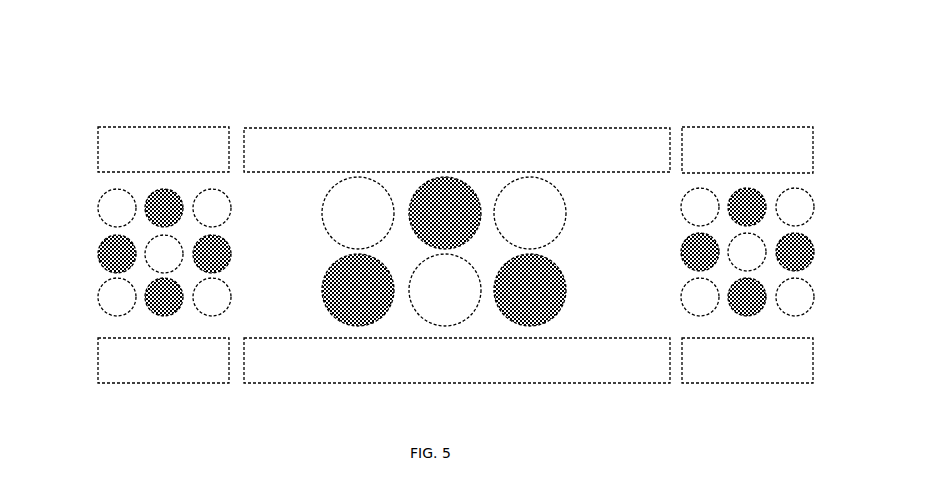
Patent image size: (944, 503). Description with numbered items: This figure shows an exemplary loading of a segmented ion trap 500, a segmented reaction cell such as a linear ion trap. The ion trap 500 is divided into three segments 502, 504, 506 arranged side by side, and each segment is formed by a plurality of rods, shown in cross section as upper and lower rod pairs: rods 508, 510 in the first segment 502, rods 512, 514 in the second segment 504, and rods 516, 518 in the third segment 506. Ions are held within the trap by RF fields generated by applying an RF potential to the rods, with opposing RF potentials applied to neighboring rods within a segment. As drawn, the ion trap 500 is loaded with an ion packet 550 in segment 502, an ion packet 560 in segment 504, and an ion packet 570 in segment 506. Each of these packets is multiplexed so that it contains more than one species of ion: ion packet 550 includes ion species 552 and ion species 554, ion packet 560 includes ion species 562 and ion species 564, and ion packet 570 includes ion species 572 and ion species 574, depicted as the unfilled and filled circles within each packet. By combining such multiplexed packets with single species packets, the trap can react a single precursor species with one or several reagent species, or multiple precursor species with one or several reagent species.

The segmented ion trap 500 is at (681, 71).
The segment 502 is at (228, 117).
The segment 504 is at (668, 117).
The segment 506 is at (812, 117).
The rod 508 is at (177, 157).
The rod 510 is at (177, 368).
The rod 512 is at (470, 157).
The rod 514 is at (470, 368).
The rod 516 is at (760, 157).
The rod 518 is at (760, 368).
The ion packet 550 is at (101, 276).
The ion species 552 is at (210, 208).
The ion species 554 is at (218, 250).
The ion packet 560 is at (324, 256).
The ion species 562 is at (545, 207).
The ion species 564 is at (552, 260).
The ion packet 570 is at (676, 278).
The ion species 572 is at (793, 207).
The ion species 574 is at (813, 247).